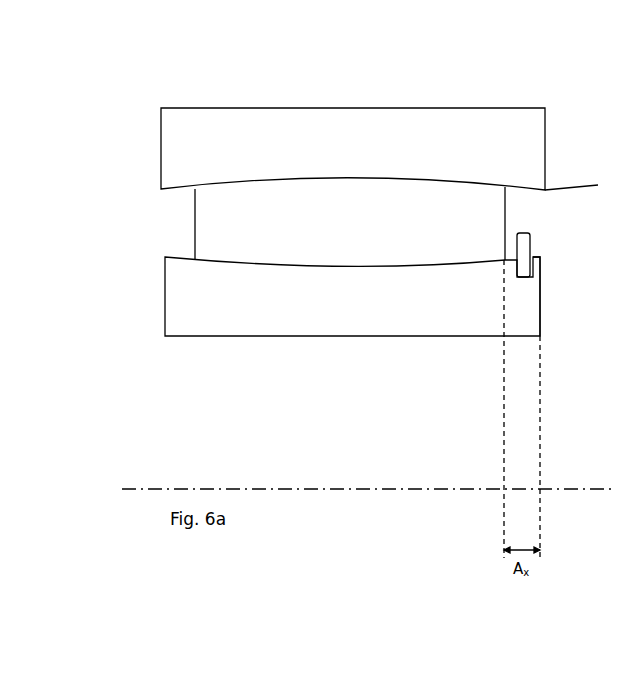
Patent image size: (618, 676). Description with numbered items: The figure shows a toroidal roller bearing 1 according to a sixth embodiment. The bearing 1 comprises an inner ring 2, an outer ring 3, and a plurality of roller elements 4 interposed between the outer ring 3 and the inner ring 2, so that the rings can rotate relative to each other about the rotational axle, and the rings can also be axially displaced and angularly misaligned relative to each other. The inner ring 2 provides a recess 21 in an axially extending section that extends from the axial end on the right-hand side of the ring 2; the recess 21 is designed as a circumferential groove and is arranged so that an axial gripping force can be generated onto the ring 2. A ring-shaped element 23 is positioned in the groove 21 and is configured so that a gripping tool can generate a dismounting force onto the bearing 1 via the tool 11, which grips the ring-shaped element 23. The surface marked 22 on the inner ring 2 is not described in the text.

The bearing 1 is at (149, 92).
The inner ring 2 is at (165, 303).
The outer ring 3 is at (545, 133).
The roller elements 4 is at (195, 222).
The tool 11 is at (581, 184).
The recess 21 is at (540, 279).
The contact surface of lower mount part 22 is at (371, 263).
The ring-shaped element 23 is at (531, 246).